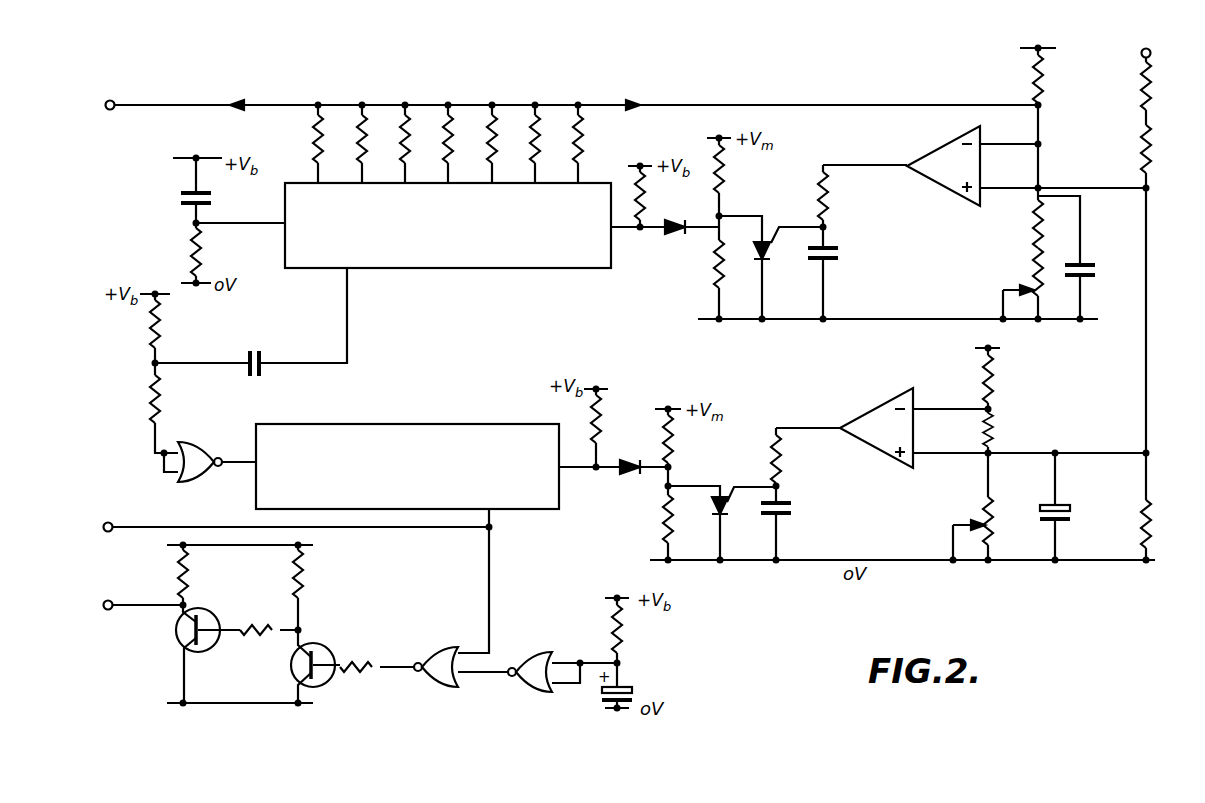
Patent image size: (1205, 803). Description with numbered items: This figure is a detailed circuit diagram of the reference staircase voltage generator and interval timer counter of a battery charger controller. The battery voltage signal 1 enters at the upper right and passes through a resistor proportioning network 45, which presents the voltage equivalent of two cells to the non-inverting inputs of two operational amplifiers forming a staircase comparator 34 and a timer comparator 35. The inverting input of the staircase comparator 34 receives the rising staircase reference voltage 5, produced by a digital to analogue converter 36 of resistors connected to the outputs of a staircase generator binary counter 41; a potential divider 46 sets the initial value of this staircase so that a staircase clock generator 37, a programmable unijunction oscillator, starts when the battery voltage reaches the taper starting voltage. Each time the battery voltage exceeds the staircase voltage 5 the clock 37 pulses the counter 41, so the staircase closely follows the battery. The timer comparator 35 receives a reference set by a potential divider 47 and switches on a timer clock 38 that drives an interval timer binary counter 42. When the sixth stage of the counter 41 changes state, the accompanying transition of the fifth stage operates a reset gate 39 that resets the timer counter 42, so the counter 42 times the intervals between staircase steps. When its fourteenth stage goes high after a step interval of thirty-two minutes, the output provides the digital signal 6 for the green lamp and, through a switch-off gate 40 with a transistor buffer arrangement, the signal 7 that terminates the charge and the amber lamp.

The battery voltage signal 1 is at (1138, 301).
The staircase reference voltage signal 5 is at (108, 100).
The digital voltage signal 6 is at (106, 522).
The digital voltage signal 7 is at (106, 600).
The staircase comparator 34 is at (952, 146).
The timer comparator 35 is at (868, 419).
The digital to analogue converter 36 is at (458, 93).
The staircase clock generator 37 is at (760, 203).
The timer clock 38 is at (713, 470).
The reset gate 39 is at (195, 447).
The switch-off gate 40 is at (168, 628).
The staircase generator binary counter 41 is at (528, 269).
The interval timer binary counter 42 is at (474, 424).
The resistor proportioning network 45 is at (1163, 58).
The potential divider 46 is at (1050, 52).
The potential divider 47 is at (1008, 553).